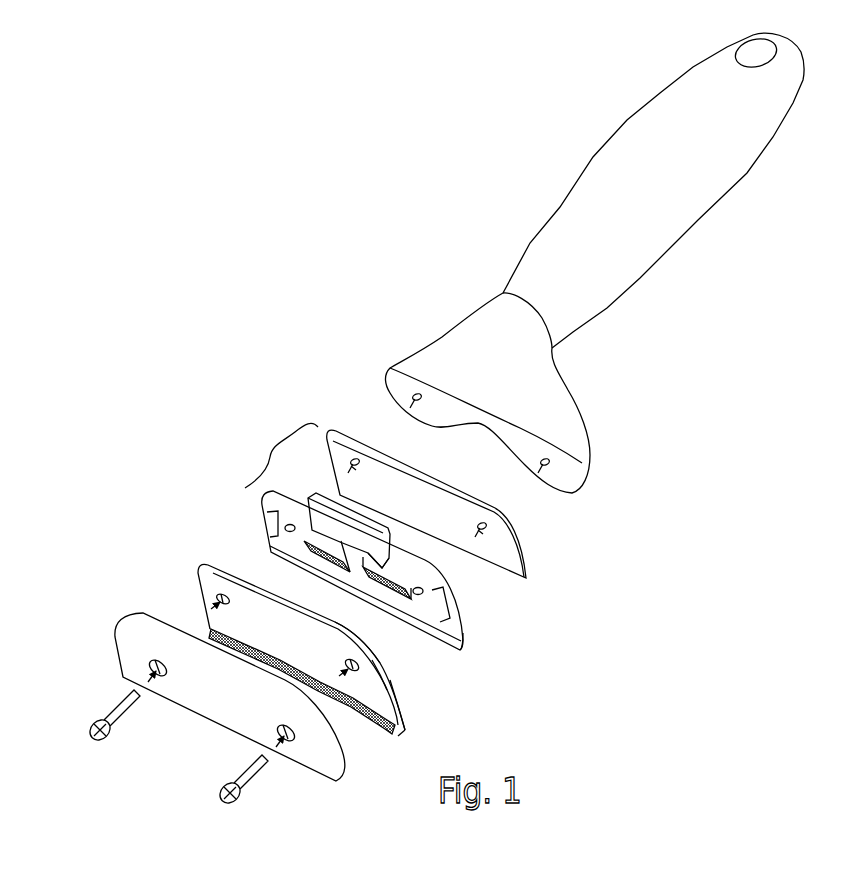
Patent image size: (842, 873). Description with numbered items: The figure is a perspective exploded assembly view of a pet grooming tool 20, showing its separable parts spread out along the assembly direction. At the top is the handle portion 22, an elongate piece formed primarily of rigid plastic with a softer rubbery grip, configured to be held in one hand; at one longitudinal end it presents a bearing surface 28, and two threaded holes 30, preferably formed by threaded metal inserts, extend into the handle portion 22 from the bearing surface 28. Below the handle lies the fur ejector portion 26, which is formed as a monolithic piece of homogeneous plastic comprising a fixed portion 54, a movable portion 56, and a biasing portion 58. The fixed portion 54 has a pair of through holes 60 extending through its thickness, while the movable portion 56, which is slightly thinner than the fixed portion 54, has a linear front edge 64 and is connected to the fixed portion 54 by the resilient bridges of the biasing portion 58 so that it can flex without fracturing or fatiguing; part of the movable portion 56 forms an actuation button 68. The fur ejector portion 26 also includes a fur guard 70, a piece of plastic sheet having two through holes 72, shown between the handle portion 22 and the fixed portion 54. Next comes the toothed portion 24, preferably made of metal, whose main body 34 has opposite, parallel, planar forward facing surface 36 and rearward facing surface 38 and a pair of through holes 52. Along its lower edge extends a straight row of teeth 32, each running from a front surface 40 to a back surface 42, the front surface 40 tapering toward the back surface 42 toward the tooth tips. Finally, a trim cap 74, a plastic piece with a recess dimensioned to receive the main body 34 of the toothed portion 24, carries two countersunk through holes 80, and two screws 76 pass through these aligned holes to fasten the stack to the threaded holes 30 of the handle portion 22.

The pet grooming tool 20 is at (275, 255).
The handle portion 22 is at (538, 260).
The toothed portion 24 is at (197, 572).
The fur ejector portion 26 is at (270, 450).
The bearing surface 28 is at (563, 488).
The threaded holes 30 is at (416, 399).
The teeth 32 is at (354, 710).
The main body 34 is at (336, 646).
The forward facing surface 36 is at (380, 698).
The rearward facing surface 38 is at (397, 680).
The front surface 40 is at (399, 731).
The back surface 42 is at (403, 718).
The through holes 52 is at (219, 601).
The fixed portion 54 is at (418, 580).
The movable portion 56 is at (466, 645).
The biasing portion 58 is at (392, 550).
The through holes 60 is at (284, 532).
The front edge 64 is at (308, 581).
The actuation button 68 is at (323, 496).
The fur guard 70 is at (512, 558).
The through holes 72 is at (352, 464).
The trim cap 74 is at (127, 650).
The screws 76 is at (113, 717).
The countersunk through holes 80 is at (158, 676).